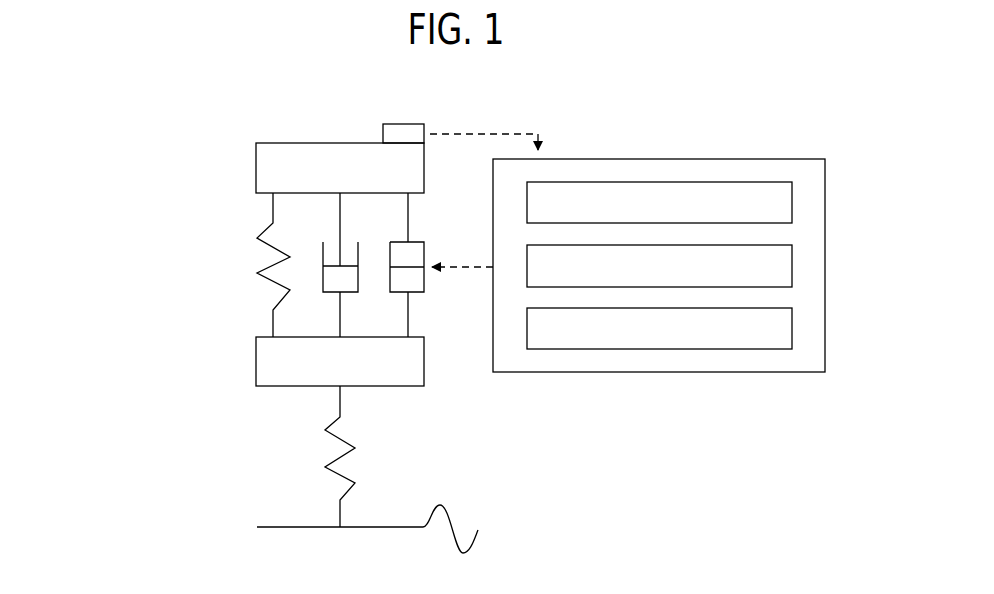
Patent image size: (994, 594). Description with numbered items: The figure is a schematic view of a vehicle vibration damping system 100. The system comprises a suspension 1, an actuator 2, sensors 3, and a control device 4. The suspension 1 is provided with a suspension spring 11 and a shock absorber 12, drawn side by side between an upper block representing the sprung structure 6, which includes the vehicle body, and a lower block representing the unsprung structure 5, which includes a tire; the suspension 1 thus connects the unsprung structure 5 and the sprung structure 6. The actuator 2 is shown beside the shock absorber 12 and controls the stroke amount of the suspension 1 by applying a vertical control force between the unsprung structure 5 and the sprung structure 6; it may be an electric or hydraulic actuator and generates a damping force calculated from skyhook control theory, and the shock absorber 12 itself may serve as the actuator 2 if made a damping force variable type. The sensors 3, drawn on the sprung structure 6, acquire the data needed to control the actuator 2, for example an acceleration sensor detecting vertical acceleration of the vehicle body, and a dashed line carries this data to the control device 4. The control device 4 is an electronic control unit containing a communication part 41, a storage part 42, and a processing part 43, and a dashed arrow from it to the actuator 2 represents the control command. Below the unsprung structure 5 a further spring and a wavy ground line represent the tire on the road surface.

The vehicle vibration damping system 100 is at (152, 140).
The suspension 1 is at (228, 265).
The suspension spring 11 is at (260, 238).
The shock absorber 12 is at (323, 283).
The actuator 2 is at (424, 245).
The sensors 3 is at (415, 124).
The control device 4 is at (792, 159).
The communication part 41 is at (792, 200).
The storage part 42 is at (792, 262).
The processing part 43 is at (792, 325).
The unsprung structure 5 is at (256, 360).
The sprung structure 6 is at (256, 167).